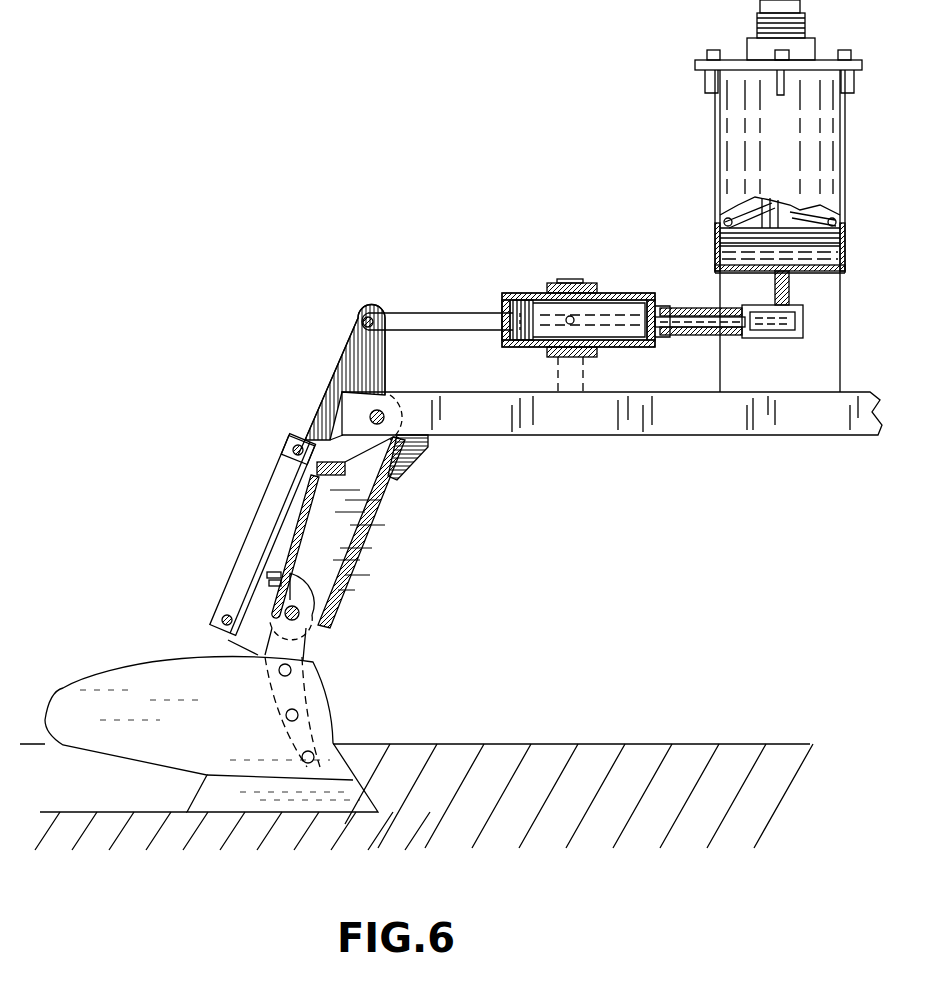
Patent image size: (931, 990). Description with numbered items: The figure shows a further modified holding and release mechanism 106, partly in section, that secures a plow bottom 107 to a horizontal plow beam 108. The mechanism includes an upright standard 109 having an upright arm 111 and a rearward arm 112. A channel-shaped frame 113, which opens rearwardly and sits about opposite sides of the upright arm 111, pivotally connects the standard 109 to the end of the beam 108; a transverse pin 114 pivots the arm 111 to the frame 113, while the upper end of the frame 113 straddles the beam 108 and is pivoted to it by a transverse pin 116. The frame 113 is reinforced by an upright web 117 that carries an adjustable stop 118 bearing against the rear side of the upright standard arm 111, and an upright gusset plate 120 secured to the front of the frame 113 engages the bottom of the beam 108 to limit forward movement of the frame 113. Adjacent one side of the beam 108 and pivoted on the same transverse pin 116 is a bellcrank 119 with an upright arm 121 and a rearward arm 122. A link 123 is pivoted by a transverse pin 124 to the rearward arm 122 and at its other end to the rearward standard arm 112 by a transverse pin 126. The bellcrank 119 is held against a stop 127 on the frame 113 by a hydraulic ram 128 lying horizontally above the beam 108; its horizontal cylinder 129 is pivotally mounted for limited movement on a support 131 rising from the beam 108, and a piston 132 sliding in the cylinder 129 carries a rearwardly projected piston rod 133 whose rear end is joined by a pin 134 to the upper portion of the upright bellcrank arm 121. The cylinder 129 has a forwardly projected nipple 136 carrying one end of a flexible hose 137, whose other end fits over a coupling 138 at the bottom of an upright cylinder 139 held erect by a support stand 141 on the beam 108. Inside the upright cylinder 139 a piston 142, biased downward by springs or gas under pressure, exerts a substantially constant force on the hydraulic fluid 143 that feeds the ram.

The holding and release mechanism 106 is at (258, 506).
The plow bottom 107 is at (124, 676).
The plow beam 108 is at (687, 415).
The upright standard 109 is at (298, 648).
The upright arm 111 is at (300, 591).
The rearward arm 112 is at (240, 645).
The channel-shaped frame 113 is at (362, 534).
The transverse pin 114 is at (305, 613).
The transverse pin 116 is at (380, 412).
The upright web 117 is at (300, 521).
The adjustable stop 118 is at (270, 580).
The bellcrank 119 is at (362, 448).
The gusset plate 120 is at (416, 456).
The upright arm 121 is at (356, 342).
The rearward arm 122 is at (312, 428).
The link 123 is at (266, 527).
The transverse pin 124 is at (292, 452).
The transverse pin 126 is at (221, 615).
The stop 127 is at (317, 471).
The hydraulic ram 128 is at (540, 283).
The horizontal cylinder 129 is at (502, 340).
The support 131 is at (553, 354).
The piston 132 is at (523, 300).
The piston rod 133 is at (470, 320).
The pin 134 is at (370, 318).
The nipple 136 is at (684, 330).
The flexible hose 137 is at (700, 306).
The coupling 138 is at (785, 338).
The upright cylinder 139 is at (730, 155).
The support stand 141 is at (833, 300).
The piston 142 is at (838, 236).
The hydraulic fluid 143 is at (610, 315).